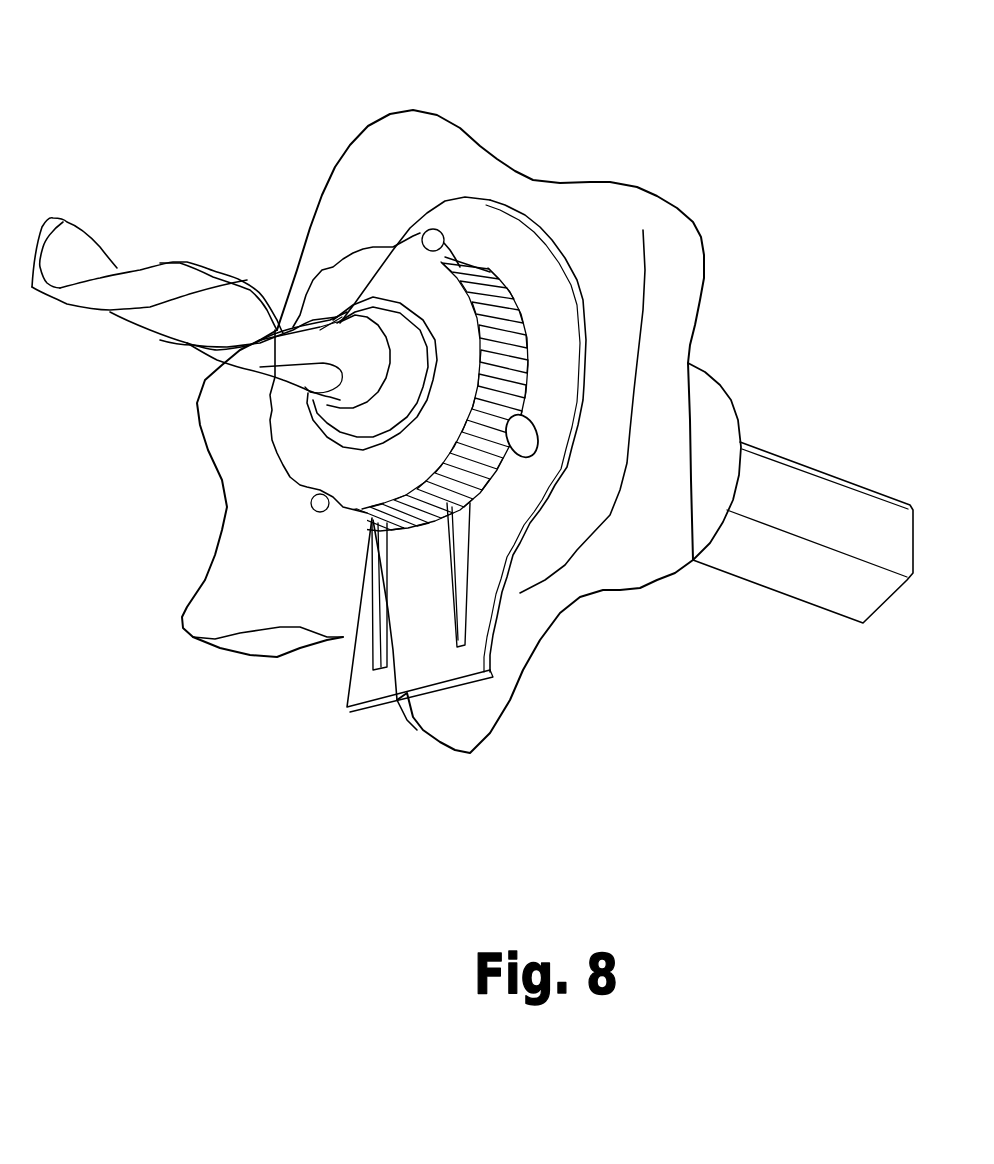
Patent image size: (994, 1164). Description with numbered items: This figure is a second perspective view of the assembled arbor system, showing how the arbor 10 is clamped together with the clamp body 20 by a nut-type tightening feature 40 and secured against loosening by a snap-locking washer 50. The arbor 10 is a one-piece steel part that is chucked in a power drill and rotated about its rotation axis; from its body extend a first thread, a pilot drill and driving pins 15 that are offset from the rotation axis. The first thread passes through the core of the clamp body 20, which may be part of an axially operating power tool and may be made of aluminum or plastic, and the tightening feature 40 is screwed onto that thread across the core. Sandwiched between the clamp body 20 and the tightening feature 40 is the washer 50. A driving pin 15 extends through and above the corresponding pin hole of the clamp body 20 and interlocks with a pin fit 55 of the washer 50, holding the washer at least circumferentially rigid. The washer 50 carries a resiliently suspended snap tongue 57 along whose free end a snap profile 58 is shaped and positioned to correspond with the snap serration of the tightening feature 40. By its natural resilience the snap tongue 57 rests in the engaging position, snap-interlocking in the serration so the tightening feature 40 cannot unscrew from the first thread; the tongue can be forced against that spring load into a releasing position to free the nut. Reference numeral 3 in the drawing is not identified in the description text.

The ratchet drill assembly 3 is at (627, 750).
The arbor 10 is at (713, 387).
The driving pin 15 is at (525, 437).
The clamp body 20 is at (463, 127).
The tightening feature 40 is at (360, 270).
The washer 50 is at (533, 267).
The pin fit 55 is at (530, 455).
The snap tongue 57 is at (410, 587).
The snap profile 58 is at (405, 520).